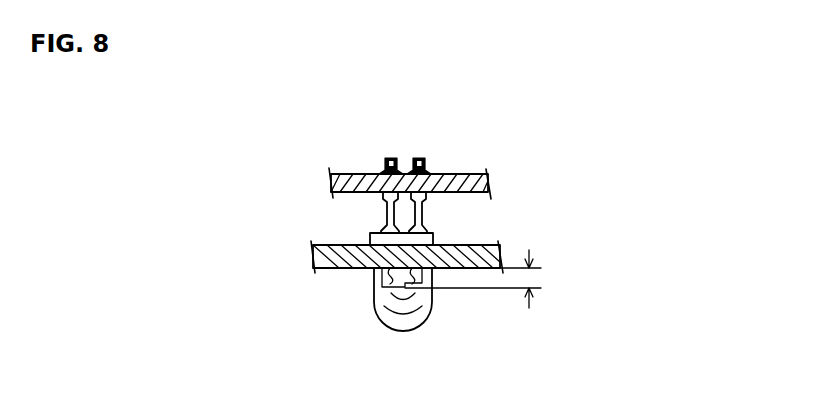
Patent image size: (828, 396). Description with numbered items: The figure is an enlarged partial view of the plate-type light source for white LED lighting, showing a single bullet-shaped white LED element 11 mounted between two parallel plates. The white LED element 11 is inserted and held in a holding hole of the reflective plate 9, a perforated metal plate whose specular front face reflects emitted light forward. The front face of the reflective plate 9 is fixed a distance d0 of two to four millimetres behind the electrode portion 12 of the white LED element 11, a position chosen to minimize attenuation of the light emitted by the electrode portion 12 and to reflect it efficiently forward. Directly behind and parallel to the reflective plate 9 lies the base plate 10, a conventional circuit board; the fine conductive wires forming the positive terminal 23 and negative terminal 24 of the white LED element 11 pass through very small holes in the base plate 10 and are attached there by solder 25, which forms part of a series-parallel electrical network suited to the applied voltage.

The reflective plate 9 is at (467, 245).
The base plate 10 is at (490, 186).
The white LED element 11 is at (433, 317).
The electrode portion 12 is at (403, 287).
The positive terminal 23 is at (426, 198).
The negative terminal 24 is at (383, 197).
The solder 25 is at (429, 173).
The distance d0 is at (528, 280).